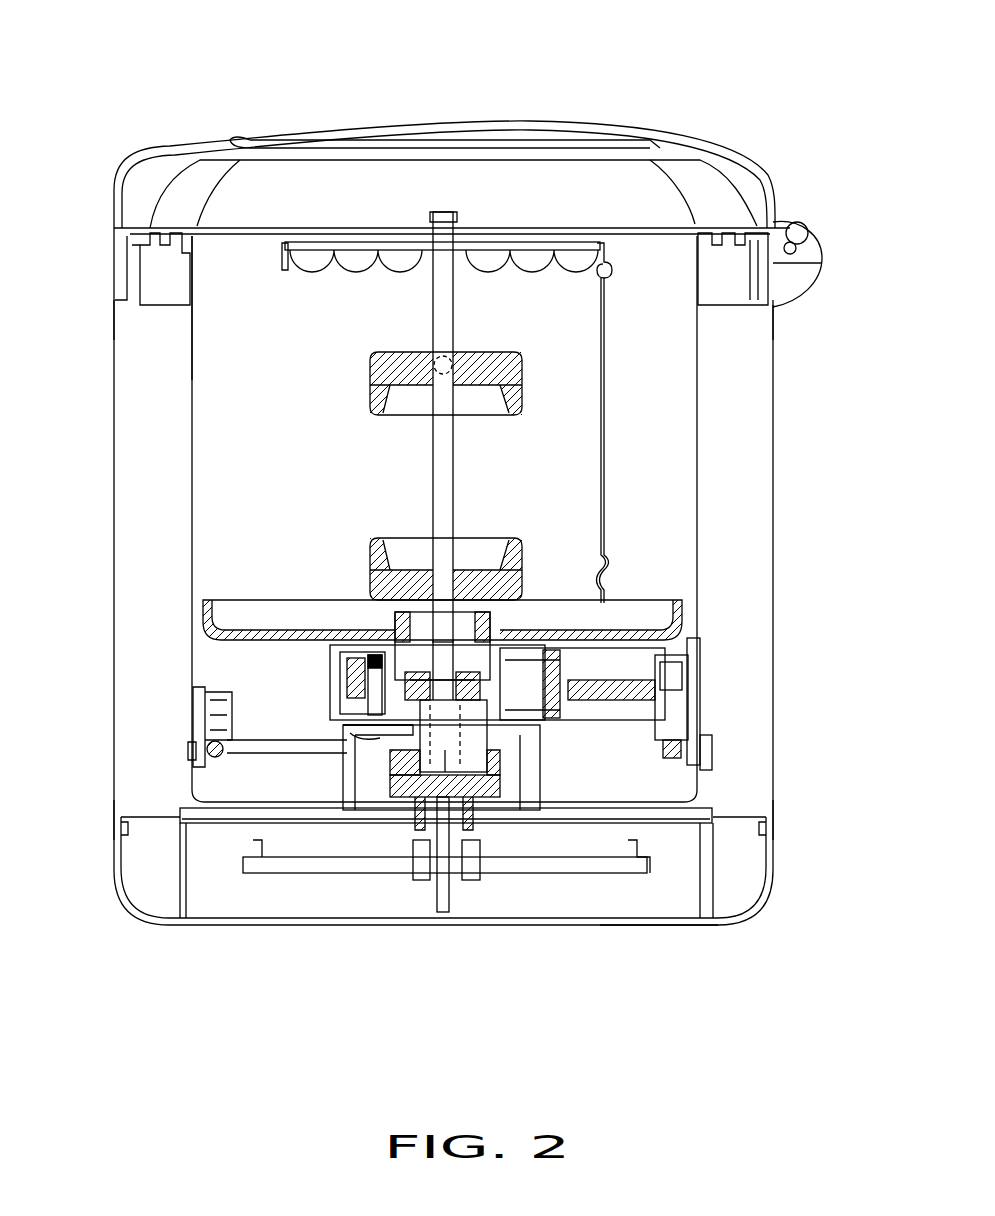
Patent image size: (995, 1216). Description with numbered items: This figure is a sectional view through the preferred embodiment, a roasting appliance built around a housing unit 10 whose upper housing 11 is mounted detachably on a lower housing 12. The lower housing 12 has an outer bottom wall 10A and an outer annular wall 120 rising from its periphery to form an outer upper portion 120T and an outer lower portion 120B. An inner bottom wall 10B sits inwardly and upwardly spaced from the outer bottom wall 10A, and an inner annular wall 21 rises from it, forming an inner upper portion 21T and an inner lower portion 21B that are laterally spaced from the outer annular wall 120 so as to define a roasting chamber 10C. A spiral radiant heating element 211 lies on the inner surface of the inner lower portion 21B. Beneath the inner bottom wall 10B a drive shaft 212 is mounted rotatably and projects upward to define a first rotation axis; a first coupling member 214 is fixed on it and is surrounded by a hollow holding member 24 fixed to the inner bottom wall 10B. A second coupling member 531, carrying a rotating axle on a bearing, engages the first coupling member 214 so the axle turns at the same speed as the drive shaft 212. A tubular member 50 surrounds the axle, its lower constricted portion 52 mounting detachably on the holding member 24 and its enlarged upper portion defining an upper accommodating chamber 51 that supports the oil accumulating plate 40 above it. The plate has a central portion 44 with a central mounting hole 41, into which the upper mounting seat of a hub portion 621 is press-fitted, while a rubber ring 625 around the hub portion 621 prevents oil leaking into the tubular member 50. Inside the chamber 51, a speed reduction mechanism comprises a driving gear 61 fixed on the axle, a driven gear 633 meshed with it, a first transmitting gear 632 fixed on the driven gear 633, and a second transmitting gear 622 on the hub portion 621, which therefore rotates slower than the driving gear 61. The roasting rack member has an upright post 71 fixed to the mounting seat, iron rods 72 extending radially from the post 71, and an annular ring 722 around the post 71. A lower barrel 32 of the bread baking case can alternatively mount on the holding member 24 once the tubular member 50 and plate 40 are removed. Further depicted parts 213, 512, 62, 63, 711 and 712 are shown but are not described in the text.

The housing unit 10 is at (463, 507).
The outer bottom wall 10A is at (663, 927).
The inner bottom wall 10B is at (660, 823).
The roasting chamber 10C is at (232, 447).
The upper housing 11 is at (716, 150).
The lower housing 12 is at (780, 414).
The outer annular wall 120 is at (499, 576).
The outer upper portion 120T is at (773, 334).
The outer lower portion 120B is at (773, 832).
The inner annular wall 21 is at (439, 623).
The inner upper portion 21T is at (192, 375).
The inner lower portion 21B is at (193, 727).
The radiant heating element 211 is at (250, 752).
The drive shaft 212 is at (465, 860).
The support bracket 213 is at (600, 873).
The first coupling member 214 is at (420, 857).
The hollow holding member 24 is at (342, 738).
The lower barrel 32 is at (364, 873).
The oil accumulating plate 40 is at (694, 606).
The central mounting hole 41 is at (395, 690).
The central portion 44 is at (393, 650).
The tubular member 50 is at (679, 710).
The upper accommodating chamber 51 is at (700, 650).
The lower constricted portion 52 is at (700, 758).
The drive shaft 512 is at (455, 880).
The second coupling member 531 is at (413, 727).
The driving gear 61 is at (401, 582).
The hub 62 is at (471, 570).
The hub portion 621 is at (403, 625).
The second transmitting gear 622 is at (560, 608).
The rubber ring 625 is at (482, 630).
The coupling post 63 is at (548, 700).
The first transmitting gear 632 is at (660, 700).
The driven gear 633 is at (498, 806).
The upright post 71 is at (433, 312).
The upper kneading hub 711 is at (482, 365).
The lower kneading hub 712 is at (472, 560).
The iron rods 72 is at (447, 165).
The annular ring 722 is at (598, 248).